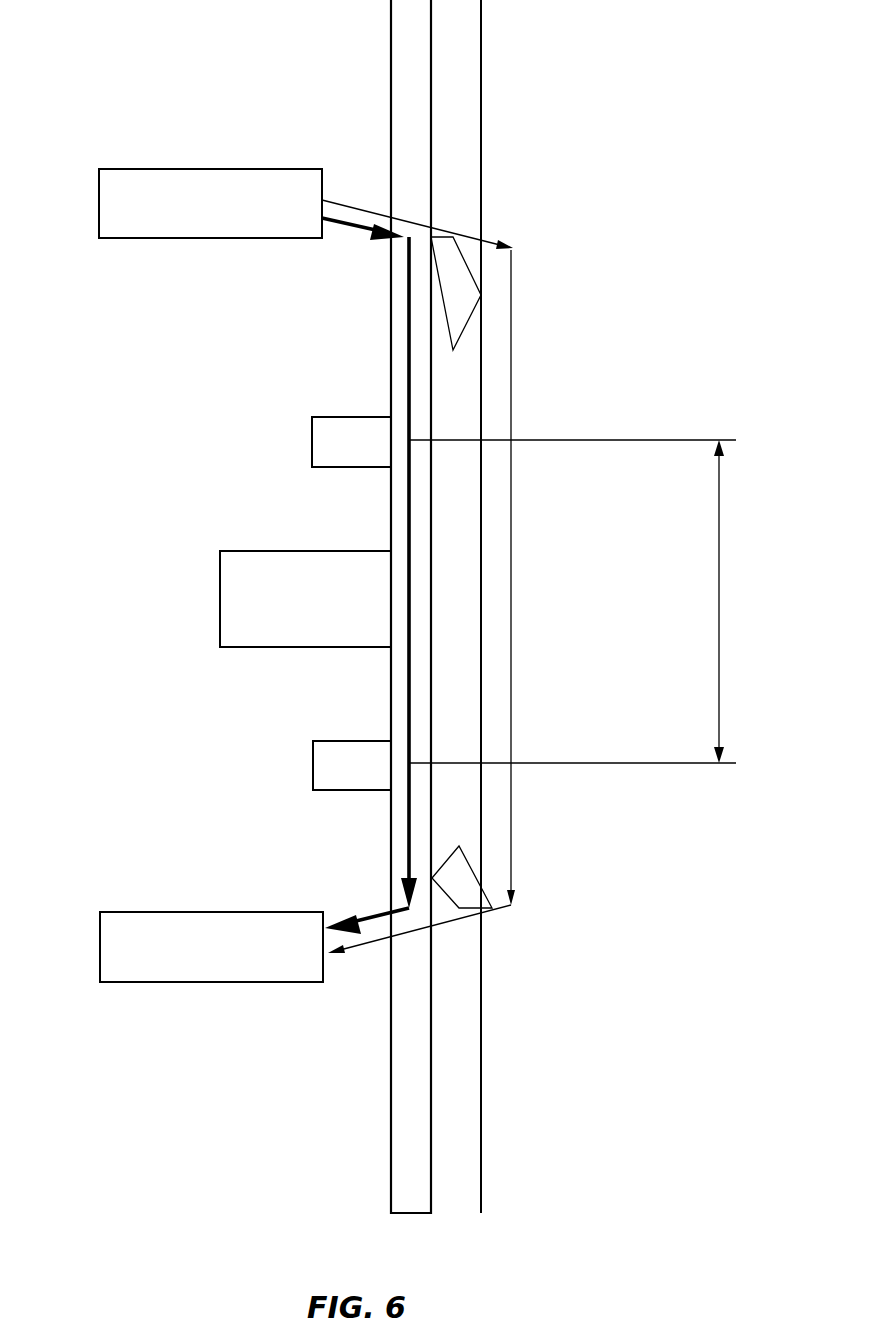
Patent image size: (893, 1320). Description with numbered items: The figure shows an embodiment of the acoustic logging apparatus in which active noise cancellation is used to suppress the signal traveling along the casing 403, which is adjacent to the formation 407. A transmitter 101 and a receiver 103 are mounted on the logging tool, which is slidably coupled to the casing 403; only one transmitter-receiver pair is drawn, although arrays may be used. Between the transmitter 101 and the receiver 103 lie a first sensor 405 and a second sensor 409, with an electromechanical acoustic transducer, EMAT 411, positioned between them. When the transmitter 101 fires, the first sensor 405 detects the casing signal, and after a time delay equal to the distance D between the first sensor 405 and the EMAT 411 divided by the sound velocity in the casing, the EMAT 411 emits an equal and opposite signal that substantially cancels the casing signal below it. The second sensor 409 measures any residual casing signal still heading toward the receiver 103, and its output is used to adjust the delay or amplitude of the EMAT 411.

The transmitter 101 is at (125, 169).
The receiver 103 is at (126, 912).
The casing 403 is at (398, 68).
The first sensor 405 is at (335, 417).
The formation 407 is at (613, 431).
The second sensor 409 is at (335, 741).
The electromechanical acoustic transducer (EMAT) 411 is at (253, 551).